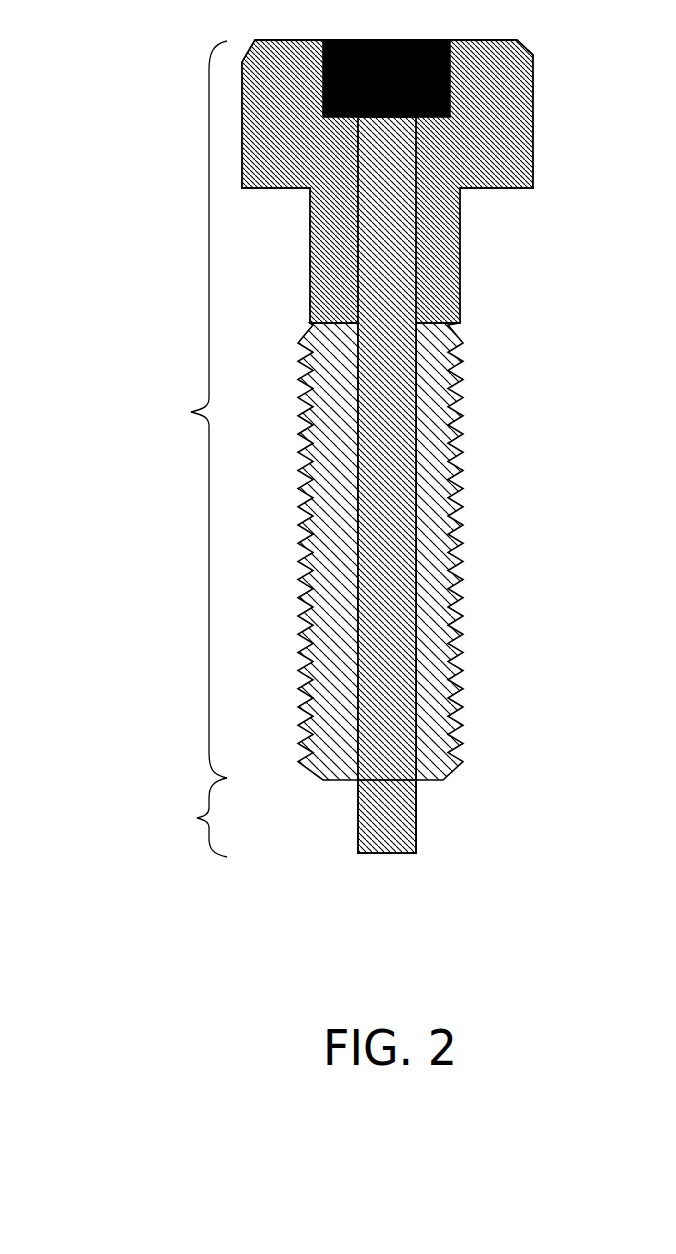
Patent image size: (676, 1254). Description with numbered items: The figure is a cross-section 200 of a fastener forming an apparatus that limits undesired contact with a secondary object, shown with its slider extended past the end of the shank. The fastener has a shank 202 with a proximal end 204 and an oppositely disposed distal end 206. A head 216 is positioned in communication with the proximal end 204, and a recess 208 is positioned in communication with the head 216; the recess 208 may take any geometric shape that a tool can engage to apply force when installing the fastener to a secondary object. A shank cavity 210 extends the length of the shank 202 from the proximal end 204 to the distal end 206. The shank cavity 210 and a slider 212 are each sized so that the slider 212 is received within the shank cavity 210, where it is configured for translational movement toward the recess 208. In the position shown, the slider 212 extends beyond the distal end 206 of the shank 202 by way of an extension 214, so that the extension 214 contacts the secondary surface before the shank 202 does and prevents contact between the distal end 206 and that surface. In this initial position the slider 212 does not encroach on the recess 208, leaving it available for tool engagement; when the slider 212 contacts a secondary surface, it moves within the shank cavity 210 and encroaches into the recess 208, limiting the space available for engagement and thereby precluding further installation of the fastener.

The cross-section 200 is at (120, 912).
The shank 202 is at (190, 409).
The proximal end 204 is at (461, 40).
The distal end 206 is at (443, 780).
The recess 208 is at (317, 78).
The shank cavity 210 is at (437, 323).
The slider 212 is at (416, 817).
The extension 214 is at (196, 818).
The head 216 is at (517, 116).